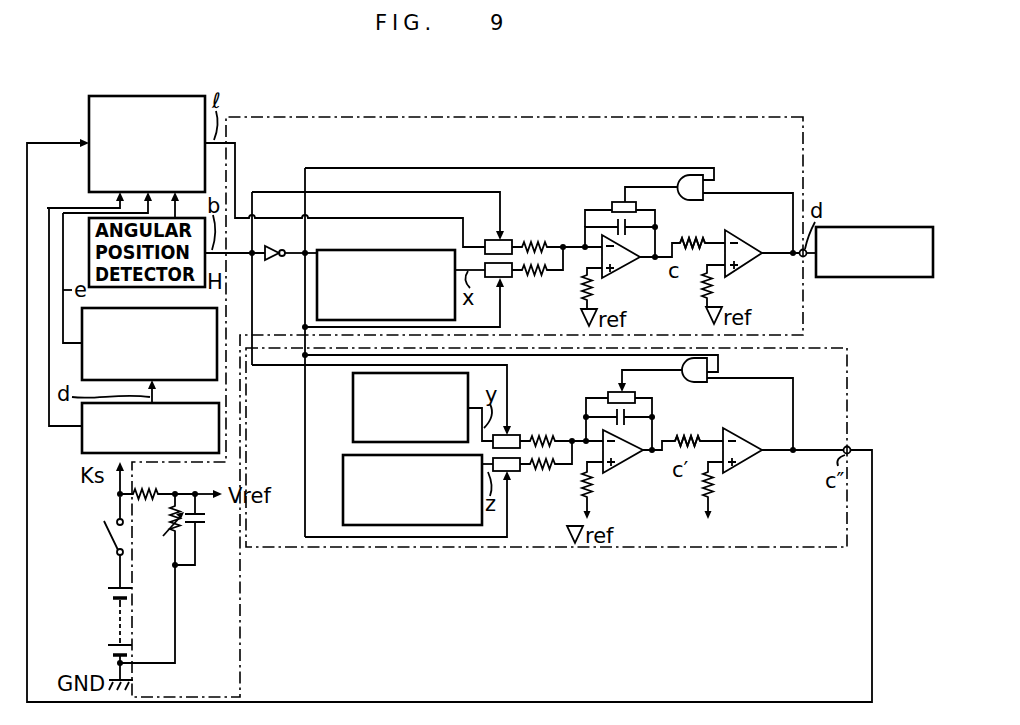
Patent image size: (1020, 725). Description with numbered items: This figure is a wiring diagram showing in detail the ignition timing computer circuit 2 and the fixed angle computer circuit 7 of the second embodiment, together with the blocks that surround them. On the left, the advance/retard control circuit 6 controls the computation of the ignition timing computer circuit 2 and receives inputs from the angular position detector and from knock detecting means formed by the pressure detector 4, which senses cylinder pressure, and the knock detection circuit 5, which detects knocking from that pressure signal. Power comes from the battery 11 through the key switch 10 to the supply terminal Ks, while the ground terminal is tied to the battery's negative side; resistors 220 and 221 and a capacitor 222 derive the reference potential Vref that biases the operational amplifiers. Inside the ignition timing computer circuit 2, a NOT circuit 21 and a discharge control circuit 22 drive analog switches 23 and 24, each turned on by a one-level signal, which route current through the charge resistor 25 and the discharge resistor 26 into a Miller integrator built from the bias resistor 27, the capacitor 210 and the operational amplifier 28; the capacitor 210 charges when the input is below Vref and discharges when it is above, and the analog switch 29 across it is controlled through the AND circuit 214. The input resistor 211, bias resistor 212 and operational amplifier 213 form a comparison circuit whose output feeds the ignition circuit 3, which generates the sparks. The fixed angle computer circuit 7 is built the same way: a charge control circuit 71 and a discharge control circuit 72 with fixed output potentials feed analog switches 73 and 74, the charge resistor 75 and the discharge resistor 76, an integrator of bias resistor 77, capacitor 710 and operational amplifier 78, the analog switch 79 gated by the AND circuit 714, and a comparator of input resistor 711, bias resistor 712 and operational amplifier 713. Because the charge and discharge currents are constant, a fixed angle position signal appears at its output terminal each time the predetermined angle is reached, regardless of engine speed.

The ignition timing computer circuit 2 is at (742, 116).
The ignition circuit 3 is at (885, 226).
The pressure detector 4 is at (82, 447).
The knock detection circuit 5 is at (174, 381).
The advance/retard control circuit 6 is at (145, 96).
The fixed angle computer circuit 7 is at (849, 393).
The key switch 10 is at (111, 543).
The battery 11 is at (124, 612).
The NOT circuit 21 is at (282, 260).
The discharge control circuit 22 is at (386, 271).
The analog switch 23 is at (490, 239).
The analog switch 24 is at (503, 279).
The charge resistor 25 is at (533, 245).
The discharge resistor 26 is at (537, 271).
The bias resistor 27 is at (585, 290).
The operational amplifier 28 is at (620, 262).
The analog switch 29 is at (614, 202).
The capacitor 210 is at (618, 224).
The input resistor 211 is at (693, 242).
The bias resistor 212 is at (712, 288).
The operational amplifier 213 is at (752, 243).
The AND circuit 214 is at (694, 175).
The resistor 220 is at (136, 494).
The resistor 221 is at (156, 529).
The capacitor 222 is at (213, 520).
The charge control circuit 71 is at (353, 403).
The discharge control circuit 72 is at (344, 503).
The analog switch 73 is at (517, 435).
The analog switch 74 is at (511, 472).
The charge resistor 75 is at (546, 439).
The discharge resistor 76 is at (541, 466).
The bias resistor 77 is at (588, 488).
The operational amplifier 78 is at (623, 461).
The analog switch 79 is at (612, 395).
The capacitor 710 is at (626, 414).
The input resistor 711 is at (690, 440).
The bias resistor 712 is at (708, 488).
The operational amplifier 713 is at (754, 463).
The AND circuit 714 is at (710, 370).